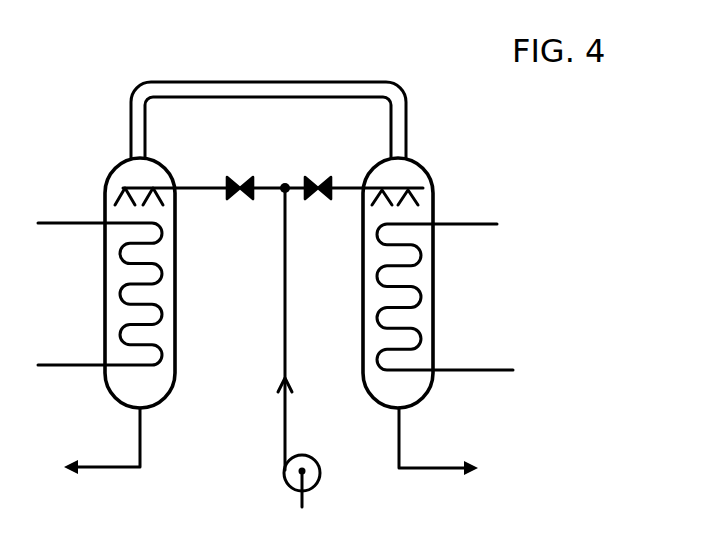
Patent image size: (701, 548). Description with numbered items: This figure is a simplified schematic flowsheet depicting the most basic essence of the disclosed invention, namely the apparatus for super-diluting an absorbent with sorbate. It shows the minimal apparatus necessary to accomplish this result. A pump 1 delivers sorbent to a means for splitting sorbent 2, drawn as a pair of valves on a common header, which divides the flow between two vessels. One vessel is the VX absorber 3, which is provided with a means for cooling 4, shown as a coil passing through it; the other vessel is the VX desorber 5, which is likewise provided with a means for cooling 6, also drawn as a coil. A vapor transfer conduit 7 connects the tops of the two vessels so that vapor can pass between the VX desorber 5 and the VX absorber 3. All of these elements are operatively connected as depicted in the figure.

The pump 1 is at (314, 458).
The means for splitting sorbent 2 is at (306, 178).
The VX absorber 3 is at (177, 290).
The means for cooling 4 is at (77, 225).
The VX desorber 5 is at (420, 170).
The means for cooling 6 is at (470, 226).
The vapor transfer conduit 7 is at (331, 98).